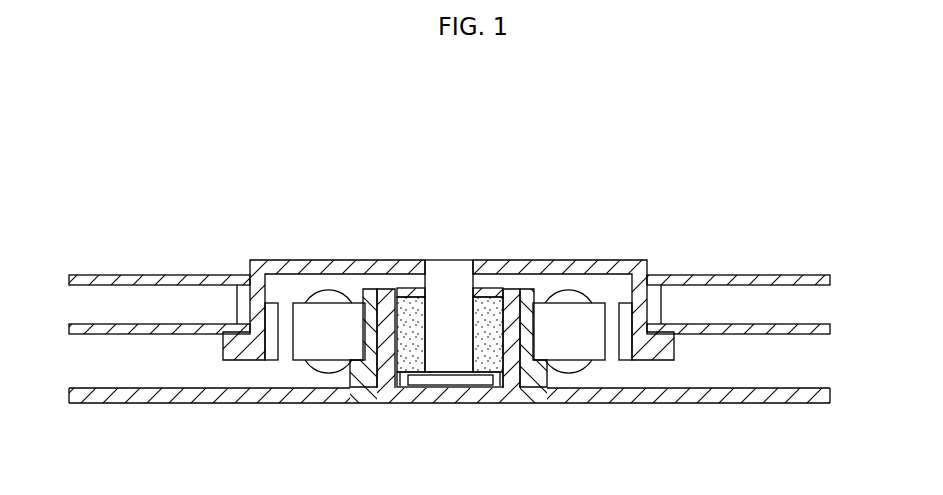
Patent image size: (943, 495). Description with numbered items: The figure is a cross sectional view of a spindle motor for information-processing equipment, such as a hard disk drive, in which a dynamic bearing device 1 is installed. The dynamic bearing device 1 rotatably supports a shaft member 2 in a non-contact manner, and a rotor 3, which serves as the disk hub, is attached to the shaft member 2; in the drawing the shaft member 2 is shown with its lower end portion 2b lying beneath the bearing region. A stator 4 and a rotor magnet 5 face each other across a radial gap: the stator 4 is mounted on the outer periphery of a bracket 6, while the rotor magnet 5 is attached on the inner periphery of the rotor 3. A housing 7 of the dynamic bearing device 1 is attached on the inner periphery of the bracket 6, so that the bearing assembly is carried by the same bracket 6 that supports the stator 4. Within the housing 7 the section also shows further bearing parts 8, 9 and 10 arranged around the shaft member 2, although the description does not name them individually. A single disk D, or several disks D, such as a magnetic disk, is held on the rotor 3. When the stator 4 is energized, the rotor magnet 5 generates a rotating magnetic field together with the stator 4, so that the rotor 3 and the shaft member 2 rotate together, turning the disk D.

The dynamic bearing device 1 is at (453, 320).
The shaft member 2 is at (450, 320).
The flange portion of shaft 2b is at (423, 378).
The rotor 3 is at (625, 260).
The stator 4 is at (597, 347).
The rotor magnet 5 is at (620, 361).
The bracket 6 is at (537, 390).
The housing 7 is at (387, 296).
The seal member 8 is at (485, 295).
The thrust bearing member 9 is at (394, 378).
The lubricant retaining member 10 is at (402, 288).
The disk D is at (755, 273).